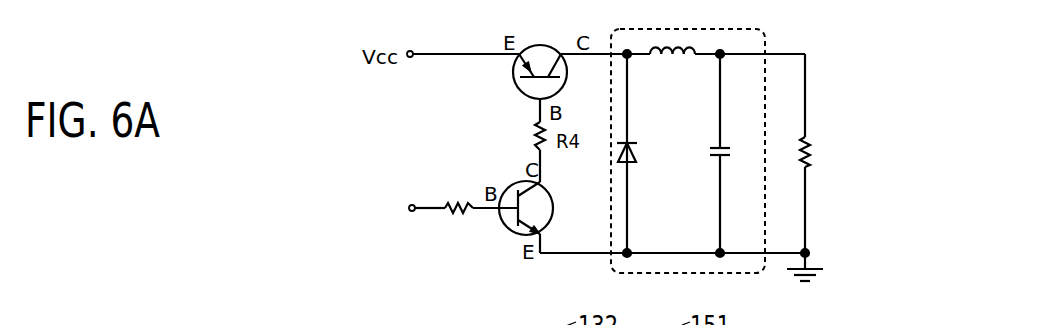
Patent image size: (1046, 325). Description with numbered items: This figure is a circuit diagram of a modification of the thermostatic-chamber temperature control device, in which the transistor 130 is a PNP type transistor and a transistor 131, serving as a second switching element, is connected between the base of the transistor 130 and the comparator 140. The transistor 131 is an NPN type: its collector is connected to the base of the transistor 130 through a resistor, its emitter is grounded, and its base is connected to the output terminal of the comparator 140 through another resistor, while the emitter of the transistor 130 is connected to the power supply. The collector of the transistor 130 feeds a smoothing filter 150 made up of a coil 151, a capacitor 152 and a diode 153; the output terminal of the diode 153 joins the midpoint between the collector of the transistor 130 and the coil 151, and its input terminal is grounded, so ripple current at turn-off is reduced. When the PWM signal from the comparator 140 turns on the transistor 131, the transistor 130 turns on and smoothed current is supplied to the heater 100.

The heater 100 is at (814, 147).
The transistor 130 is at (540, 46).
The transistor 131 is at (544, 200).
The comparator 140 is at (354, 216).
The smoothing filter 150 is at (679, 274).
The coil 151 is at (666, 50).
The capacitor 152 is at (712, 157).
The diode 153 is at (634, 148).